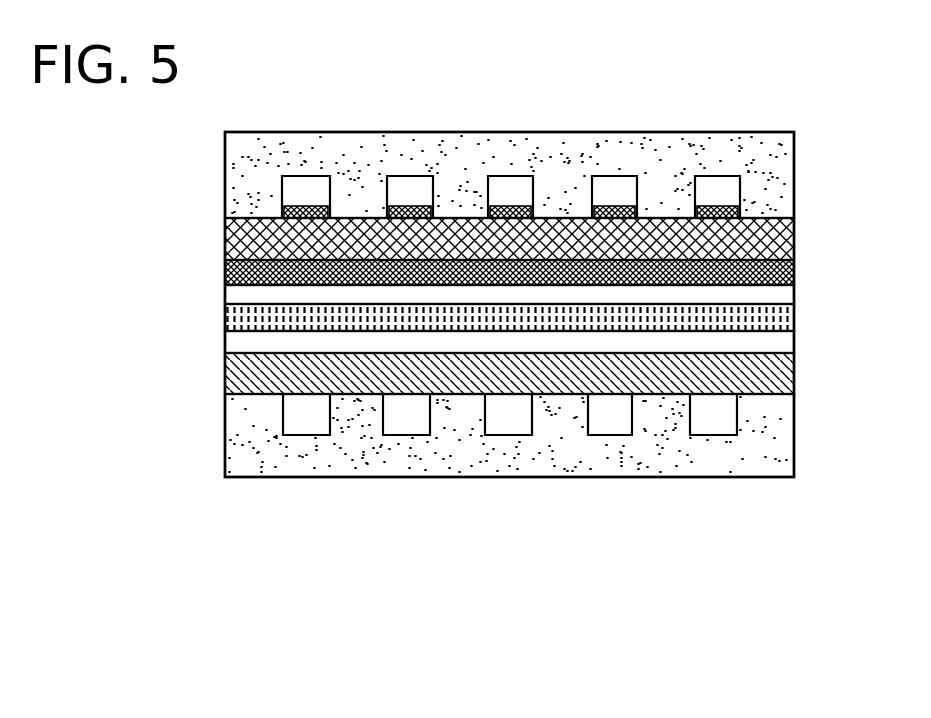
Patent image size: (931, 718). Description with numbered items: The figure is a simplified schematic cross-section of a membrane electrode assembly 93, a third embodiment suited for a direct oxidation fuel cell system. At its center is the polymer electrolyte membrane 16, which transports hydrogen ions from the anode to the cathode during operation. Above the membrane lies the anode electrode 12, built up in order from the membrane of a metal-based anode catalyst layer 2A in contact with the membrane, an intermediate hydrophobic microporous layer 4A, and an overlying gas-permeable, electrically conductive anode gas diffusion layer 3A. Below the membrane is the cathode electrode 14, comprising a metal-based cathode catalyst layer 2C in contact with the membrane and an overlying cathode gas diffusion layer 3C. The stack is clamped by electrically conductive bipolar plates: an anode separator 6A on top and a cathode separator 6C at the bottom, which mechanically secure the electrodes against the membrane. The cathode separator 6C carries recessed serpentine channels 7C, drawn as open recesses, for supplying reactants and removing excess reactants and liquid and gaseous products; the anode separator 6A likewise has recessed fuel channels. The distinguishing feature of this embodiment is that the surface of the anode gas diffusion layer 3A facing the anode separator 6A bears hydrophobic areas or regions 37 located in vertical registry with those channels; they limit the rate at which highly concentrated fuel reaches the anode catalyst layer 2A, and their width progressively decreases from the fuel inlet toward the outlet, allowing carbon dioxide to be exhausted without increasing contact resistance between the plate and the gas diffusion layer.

The membrane electrode assembly 93 is at (367, 122).
The anode electrode 12 is at (424, 219).
The anode separator 6A is at (220, 160).
The anode gas diffusion layer 3A is at (220, 235).
The intermediate hydrophobic microporous layer 4A is at (220, 270).
The anode catalyst layer 2A is at (453, 289).
The hydrophobic areas or regions 37 is at (717, 200).
The polymer electrolyte membrane 16 is at (220, 315).
The cathode electrode 14 is at (422, 404).
The cathode catalyst layer 2C is at (220, 342).
The cathode gas diffusion layer 3C is at (220, 378).
The cathode separator 6C is at (453, 435).
The cathode serpentine channels 7C is at (715, 418).